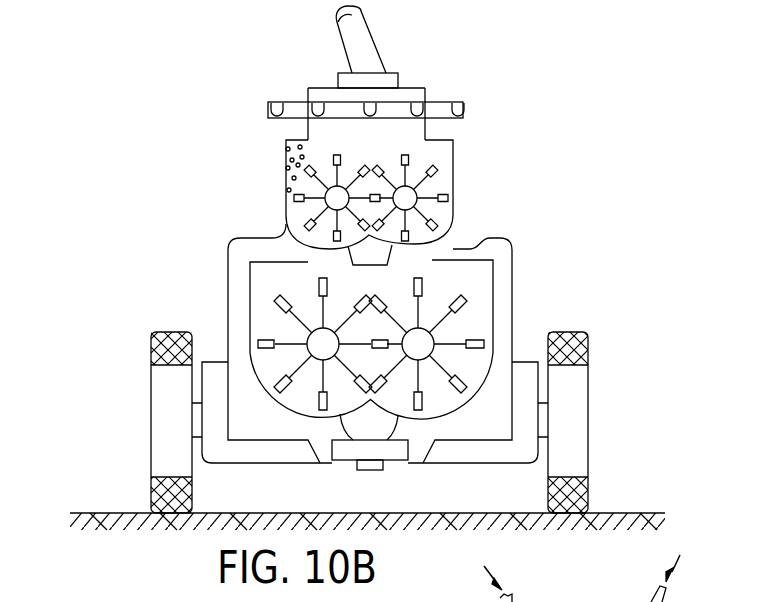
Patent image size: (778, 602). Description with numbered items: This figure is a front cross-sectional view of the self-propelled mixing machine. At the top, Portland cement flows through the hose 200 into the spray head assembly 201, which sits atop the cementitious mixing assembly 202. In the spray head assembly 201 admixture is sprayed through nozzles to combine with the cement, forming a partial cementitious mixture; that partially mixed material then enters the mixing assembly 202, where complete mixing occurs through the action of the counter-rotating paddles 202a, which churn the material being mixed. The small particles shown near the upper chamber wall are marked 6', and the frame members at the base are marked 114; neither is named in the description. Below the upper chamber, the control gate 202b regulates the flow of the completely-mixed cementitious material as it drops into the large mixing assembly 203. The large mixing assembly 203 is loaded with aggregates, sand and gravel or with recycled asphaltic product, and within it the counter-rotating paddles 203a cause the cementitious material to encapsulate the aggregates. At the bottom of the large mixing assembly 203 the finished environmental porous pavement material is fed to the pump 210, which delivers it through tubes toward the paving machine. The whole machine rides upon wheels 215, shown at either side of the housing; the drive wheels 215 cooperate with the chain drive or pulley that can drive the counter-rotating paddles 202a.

The hose 200 is at (362, 34).
The spray head assembly 201 is at (425, 101).
The particles 6' is at (269, 159).
The cementitious mixing assembly 202 is at (283, 178).
The counter-rotating paddles 202a is at (450, 198).
The control gate 202b is at (402, 249).
The large mixing assembly 203 is at (228, 302).
The counter-rotating paddles 203a is at (462, 298).
The pump 210 is at (388, 453).
The frame 114 is at (223, 452).
The wheels 215 is at (151, 442).